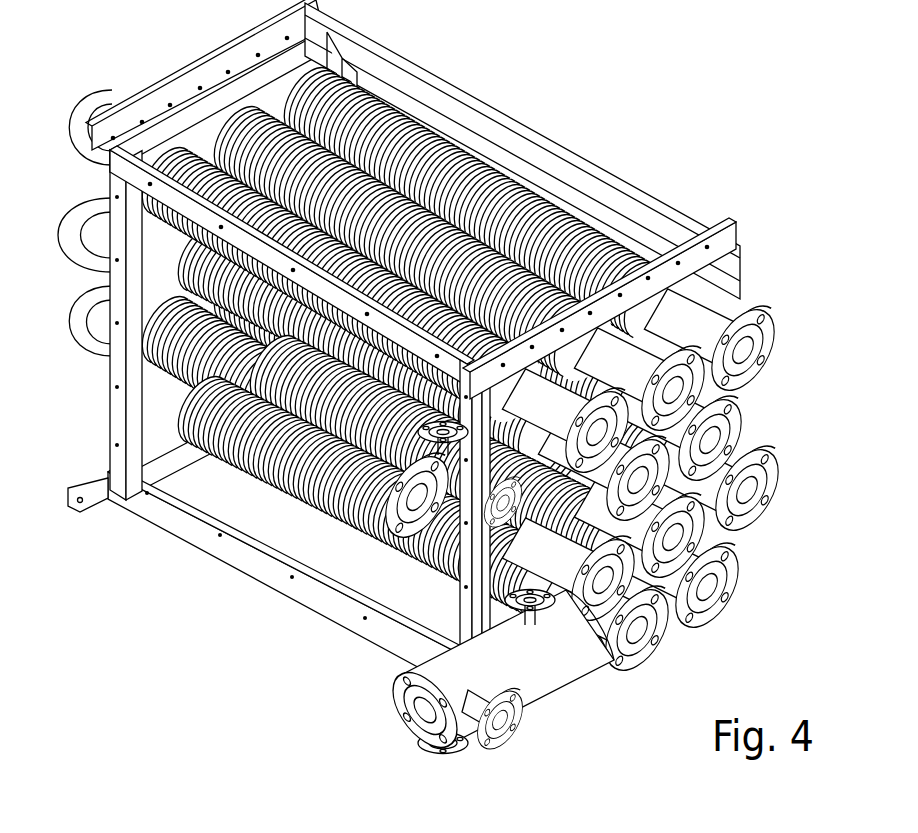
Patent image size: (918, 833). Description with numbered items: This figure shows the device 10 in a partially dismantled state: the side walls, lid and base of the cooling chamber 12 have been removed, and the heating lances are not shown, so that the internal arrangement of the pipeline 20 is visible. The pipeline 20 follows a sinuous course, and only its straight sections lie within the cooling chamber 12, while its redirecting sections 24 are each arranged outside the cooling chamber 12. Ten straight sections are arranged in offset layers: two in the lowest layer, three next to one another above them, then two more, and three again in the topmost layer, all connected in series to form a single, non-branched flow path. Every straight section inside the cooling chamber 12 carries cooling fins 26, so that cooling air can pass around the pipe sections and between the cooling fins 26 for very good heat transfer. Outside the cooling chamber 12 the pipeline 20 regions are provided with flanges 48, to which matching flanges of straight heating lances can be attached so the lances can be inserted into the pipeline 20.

The device 10 is at (577, 98).
The cooling chamber 12 is at (212, 486).
The pipeline 20 is at (296, 496).
The redirecting sections 24 is at (115, 106).
The cooling fins 26 is at (356, 507).
The flanges 48 is at (638, 660).